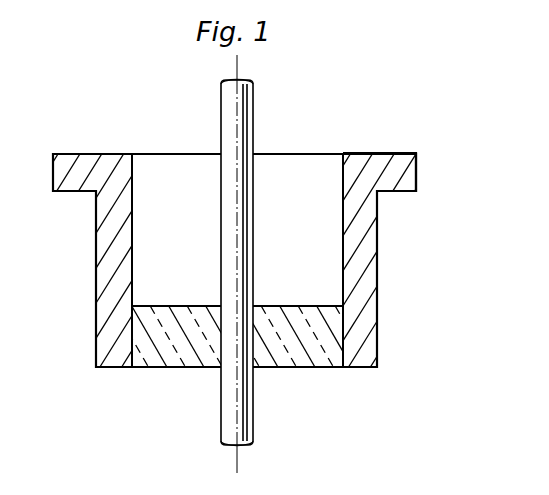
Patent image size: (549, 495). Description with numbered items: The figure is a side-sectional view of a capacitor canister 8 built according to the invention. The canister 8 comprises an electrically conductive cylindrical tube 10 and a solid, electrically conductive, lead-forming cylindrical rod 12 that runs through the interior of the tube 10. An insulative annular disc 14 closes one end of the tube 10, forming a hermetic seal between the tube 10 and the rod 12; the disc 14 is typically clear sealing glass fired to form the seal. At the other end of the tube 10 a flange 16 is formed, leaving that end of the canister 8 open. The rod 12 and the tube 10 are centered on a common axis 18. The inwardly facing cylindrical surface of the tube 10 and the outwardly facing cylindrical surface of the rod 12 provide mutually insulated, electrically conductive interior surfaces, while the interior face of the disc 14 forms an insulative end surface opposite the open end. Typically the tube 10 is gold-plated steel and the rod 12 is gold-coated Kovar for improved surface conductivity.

The capacitor canister 8 is at (90, 133).
The cylindrical tube 10 is at (367, 229).
The cylindrical rod 12 is at (254, 406).
The annular disc 14 is at (318, 368).
The flange 16 is at (398, 153).
The axis 18 is at (238, 463).